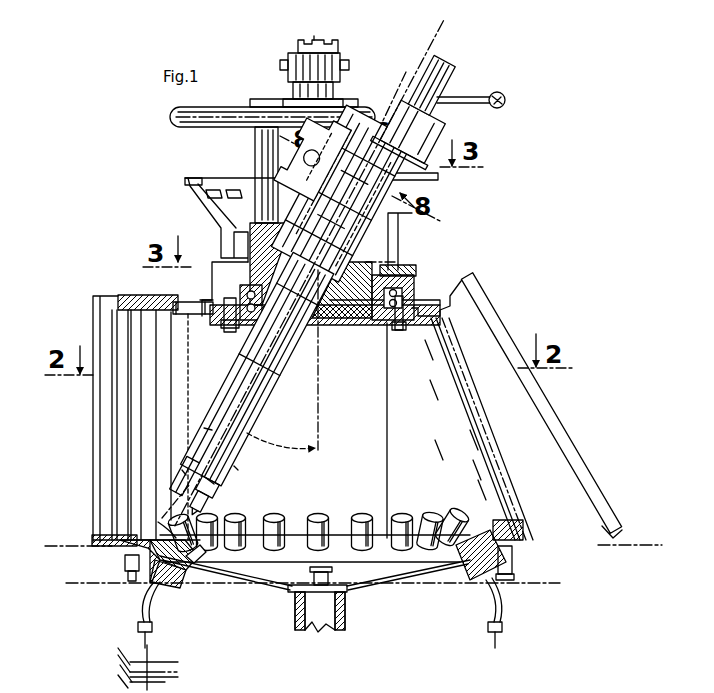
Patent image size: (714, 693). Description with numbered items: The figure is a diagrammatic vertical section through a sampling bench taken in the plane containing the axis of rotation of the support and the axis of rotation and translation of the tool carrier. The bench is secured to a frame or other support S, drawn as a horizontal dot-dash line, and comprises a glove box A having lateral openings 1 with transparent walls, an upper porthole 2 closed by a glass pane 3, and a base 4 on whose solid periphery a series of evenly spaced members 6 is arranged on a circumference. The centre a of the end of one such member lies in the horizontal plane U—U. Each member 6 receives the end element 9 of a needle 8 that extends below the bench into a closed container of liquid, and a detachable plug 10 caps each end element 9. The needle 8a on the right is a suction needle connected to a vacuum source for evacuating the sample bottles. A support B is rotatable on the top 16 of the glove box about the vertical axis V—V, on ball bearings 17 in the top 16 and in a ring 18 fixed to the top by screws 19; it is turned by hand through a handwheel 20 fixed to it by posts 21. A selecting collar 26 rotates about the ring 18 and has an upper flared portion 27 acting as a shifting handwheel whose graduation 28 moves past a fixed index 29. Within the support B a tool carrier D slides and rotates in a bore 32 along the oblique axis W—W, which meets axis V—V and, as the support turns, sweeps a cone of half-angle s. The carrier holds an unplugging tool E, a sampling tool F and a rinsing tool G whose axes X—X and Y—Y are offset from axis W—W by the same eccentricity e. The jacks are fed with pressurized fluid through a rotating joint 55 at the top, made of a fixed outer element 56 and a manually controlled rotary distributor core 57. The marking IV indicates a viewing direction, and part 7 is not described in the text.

The lateral openings 1 is at (105, 536).
The porthole 2 is at (160, 312).
The glass pane 3 is at (140, 294).
The base 4 is at (380, 584).
The members 6 is at (190, 560).
The nozzle holder 7 is at (152, 577).
The needles 8 is at (150, 642).
The suction needle 8a is at (494, 640).
The end element 9 is at (172, 580).
The detachable plug 10 is at (220, 526).
The top 16 is at (426, 318).
The ball bearings 17 is at (390, 314).
The ring 18 is at (405, 296).
The screws 19 is at (398, 328).
The handwheel 20 is at (178, 116).
The posts 21 is at (257, 142).
The selecting collar 26 is at (214, 272).
The upper flared portion 27 is at (210, 188).
The graduation 28 is at (236, 188).
The fixed reference or index 29 is at (196, 212).
The bore 32 is at (296, 277).
The rotating joint 55 is at (296, 52).
The fixed outer element 56 is at (348, 66).
The rotary distributor core 57 is at (330, 46).
The glove box A is at (266, 596).
The support B is at (356, 326).
The tool carrier D is at (400, 250).
The unplugging tool E is at (180, 472).
The sampling tool F is at (236, 468).
The rinsing tool G is at (204, 428).
The frame or other support S is at (92, 582).
The horizontal plane U— U is at (353, 528).
The vertical axis V— V is at (325, 360).
The axis W— W is at (244, 420).
The axis X— X is at (279, 293).
The axis Y— Y is at (210, 482).
The centre a is at (161, 528).
The eccentricity e is at (446, 46).
The half-angle at the apex s is at (281, 435).
The view direction IV is at (313, 31).